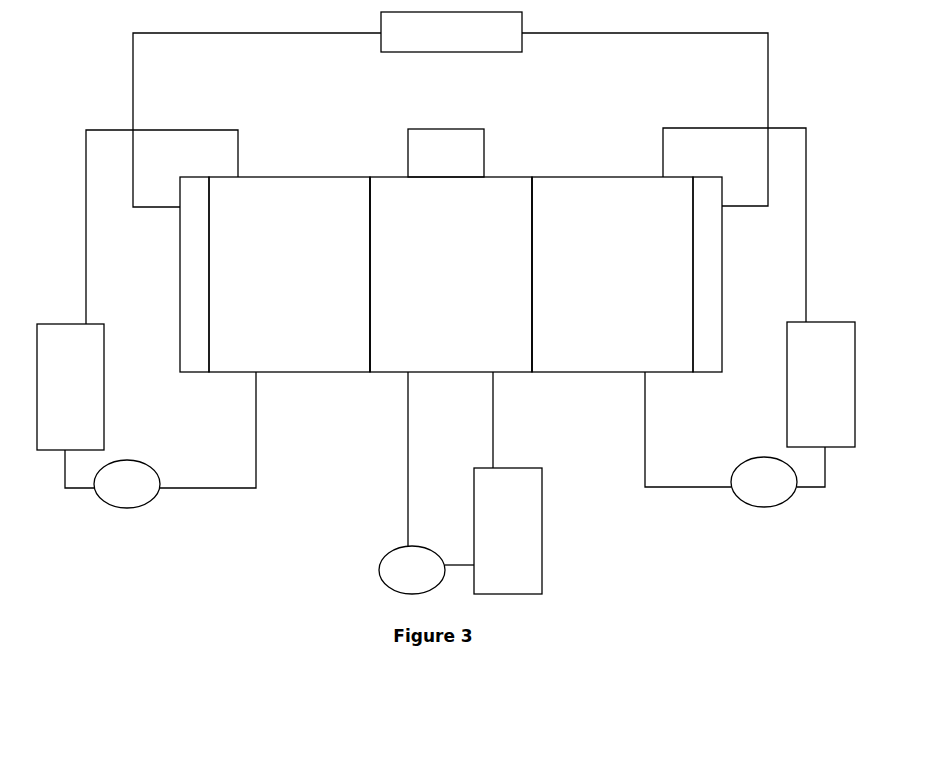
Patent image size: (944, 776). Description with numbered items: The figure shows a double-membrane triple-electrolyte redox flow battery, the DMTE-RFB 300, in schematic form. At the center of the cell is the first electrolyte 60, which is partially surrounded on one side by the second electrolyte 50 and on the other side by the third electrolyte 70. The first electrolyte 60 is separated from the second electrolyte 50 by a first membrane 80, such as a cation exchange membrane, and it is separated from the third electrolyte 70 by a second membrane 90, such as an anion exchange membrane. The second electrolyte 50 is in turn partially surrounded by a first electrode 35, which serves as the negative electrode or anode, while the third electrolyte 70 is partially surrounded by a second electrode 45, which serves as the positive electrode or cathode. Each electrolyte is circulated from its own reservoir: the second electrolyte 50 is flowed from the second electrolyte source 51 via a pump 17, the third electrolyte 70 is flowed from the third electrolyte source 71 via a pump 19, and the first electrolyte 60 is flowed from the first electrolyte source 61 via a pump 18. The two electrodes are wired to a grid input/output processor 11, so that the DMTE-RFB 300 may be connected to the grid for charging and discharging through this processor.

The grid input/output processor 11 is at (450, 109).
The pump 17 is at (160, 440).
The pump 18 is at (426, 483).
The pump 19 is at (735, 439).
The first electrode 35 is at (196, 310).
The second electrode 45 is at (704, 311).
The second electrolyte 50 is at (289, 274).
The second electrolyte source 51 is at (137, 290).
The first electrolyte 60 is at (451, 250).
The first electrolyte source 61 is at (508, 483).
The third electrolyte 70 is at (612, 274).
The third electrolyte source 71 is at (759, 287).
The first membrane 80 is at (368, 222).
The second membrane 90 is at (533, 231).
The DMTE-RFB 300 is at (452, 348).